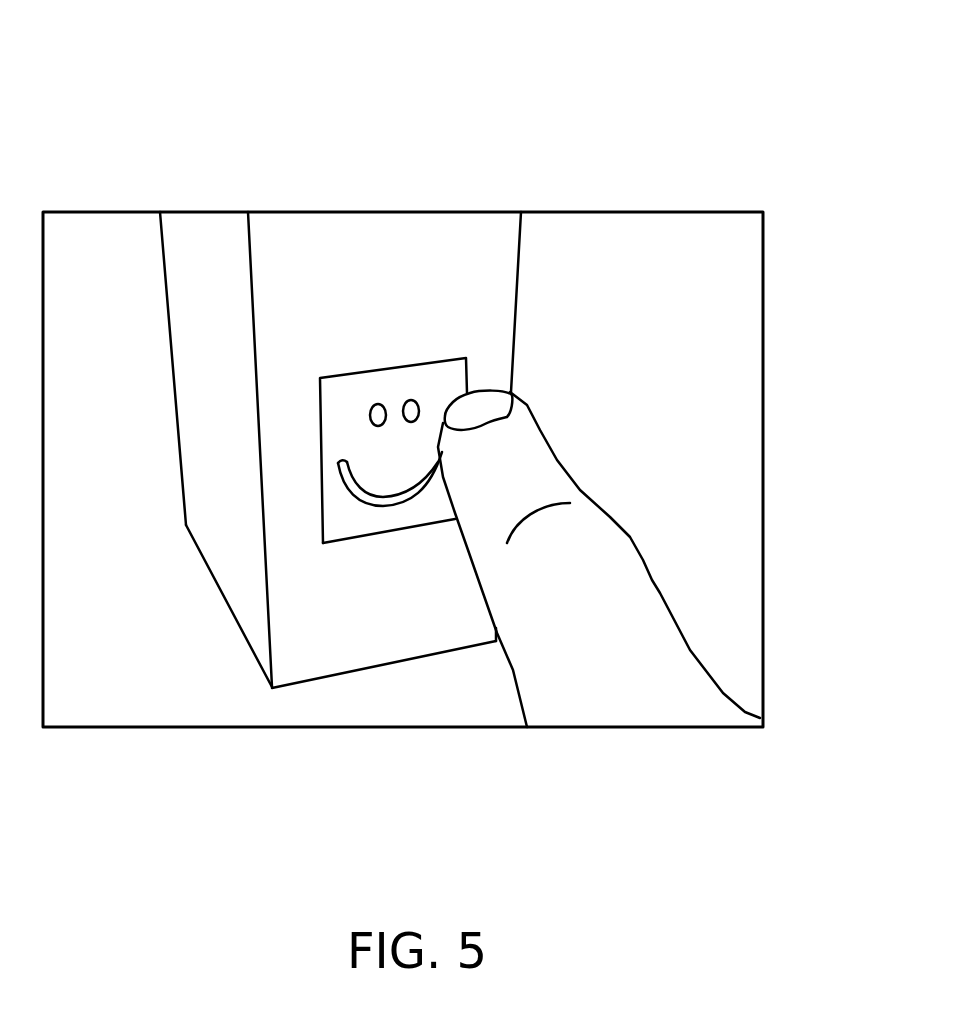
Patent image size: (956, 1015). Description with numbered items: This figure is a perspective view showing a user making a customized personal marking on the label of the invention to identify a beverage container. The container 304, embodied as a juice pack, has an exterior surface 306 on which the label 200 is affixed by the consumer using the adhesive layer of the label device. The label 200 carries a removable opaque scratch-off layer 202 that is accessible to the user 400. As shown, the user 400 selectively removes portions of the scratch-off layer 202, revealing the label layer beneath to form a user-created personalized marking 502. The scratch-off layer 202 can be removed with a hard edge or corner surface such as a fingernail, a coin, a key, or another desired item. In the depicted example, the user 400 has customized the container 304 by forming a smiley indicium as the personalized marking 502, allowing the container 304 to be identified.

The container 304 is at (254, 196).
The exterior surface 306 is at (463, 273).
The user-created personalized marking 502 is at (420, 409).
The label 200 is at (303, 477).
The scratch-off layer 202 is at (361, 527).
The user 400 is at (608, 605).